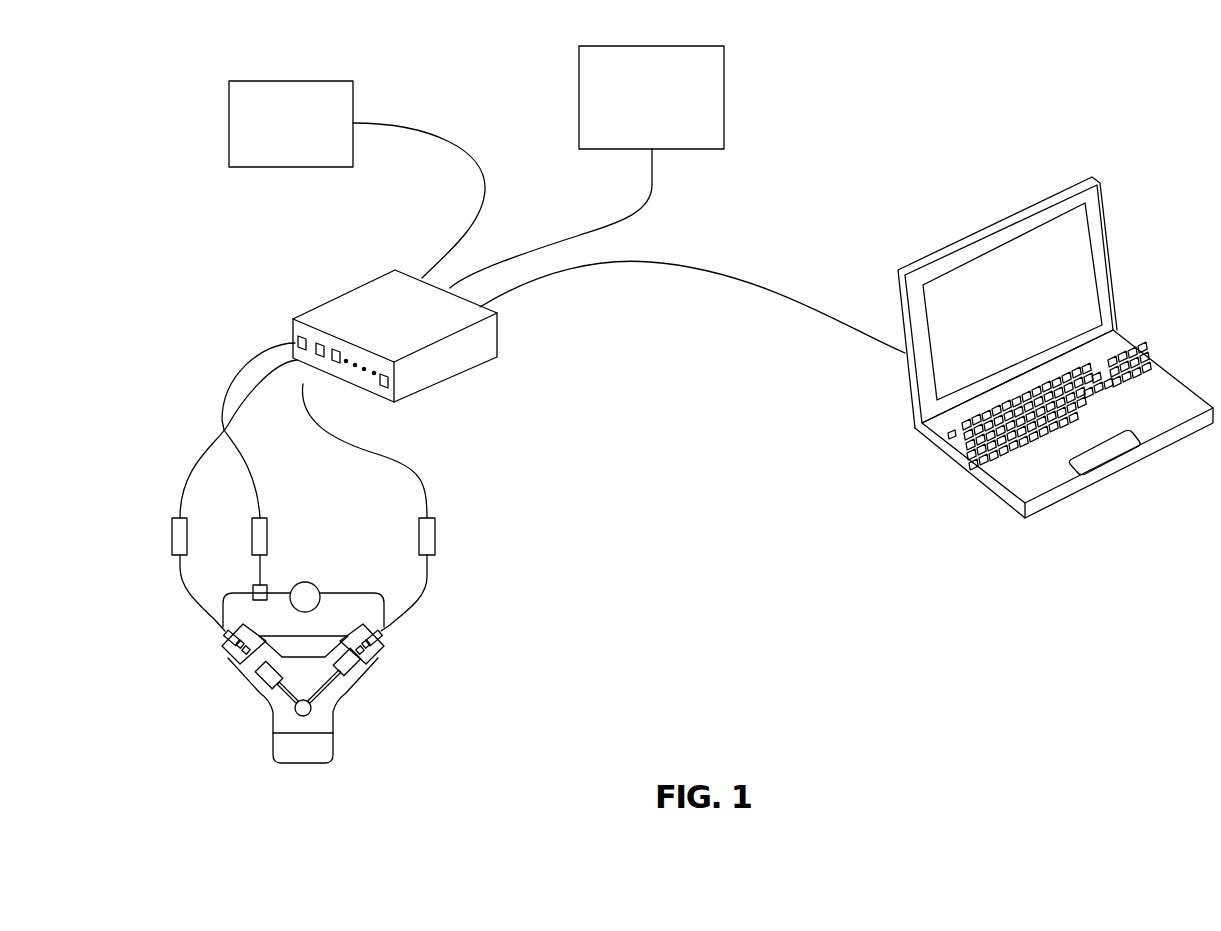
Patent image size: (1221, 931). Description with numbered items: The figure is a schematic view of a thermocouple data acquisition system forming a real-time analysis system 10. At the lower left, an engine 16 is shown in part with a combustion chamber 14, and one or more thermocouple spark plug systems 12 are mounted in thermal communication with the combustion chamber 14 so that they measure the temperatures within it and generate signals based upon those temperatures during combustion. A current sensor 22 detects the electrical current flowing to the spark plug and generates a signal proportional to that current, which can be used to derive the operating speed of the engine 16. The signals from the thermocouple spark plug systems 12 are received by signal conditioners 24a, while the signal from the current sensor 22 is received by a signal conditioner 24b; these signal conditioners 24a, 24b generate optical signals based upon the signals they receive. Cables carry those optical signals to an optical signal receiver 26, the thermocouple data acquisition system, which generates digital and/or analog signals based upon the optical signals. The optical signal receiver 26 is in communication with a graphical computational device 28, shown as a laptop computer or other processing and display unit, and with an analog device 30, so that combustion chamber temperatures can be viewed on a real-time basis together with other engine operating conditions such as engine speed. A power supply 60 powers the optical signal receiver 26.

The real-time analysis system 10 is at (760, 602).
The thermocouple spark plug system 12 is at (227, 643).
The combustion chamber 14 is at (253, 658).
The engine 16 is at (350, 692).
The current sensor 22 is at (265, 583).
The signal conditioner 24a is at (172, 533).
The signal conditioner 24b is at (267, 525).
The optical signal receiver 26 is at (443, 378).
The graphical computational device 28 is at (967, 477).
The analog device 30 is at (724, 95).
The power supply 60 is at (229, 117).